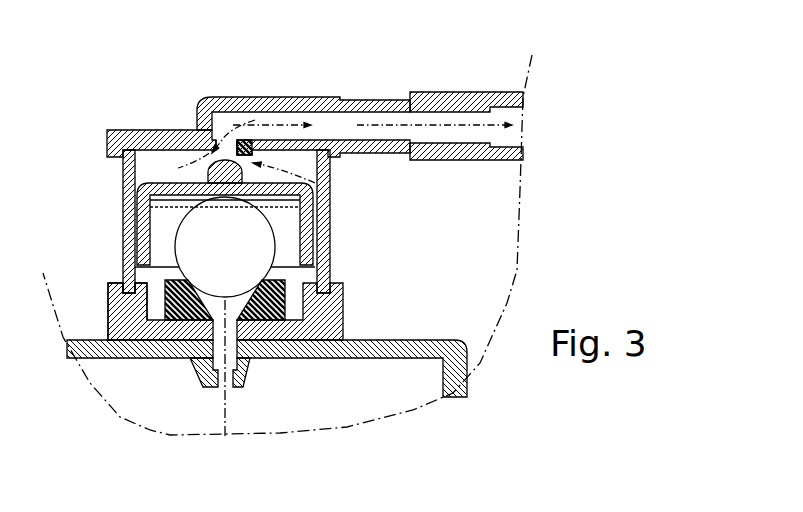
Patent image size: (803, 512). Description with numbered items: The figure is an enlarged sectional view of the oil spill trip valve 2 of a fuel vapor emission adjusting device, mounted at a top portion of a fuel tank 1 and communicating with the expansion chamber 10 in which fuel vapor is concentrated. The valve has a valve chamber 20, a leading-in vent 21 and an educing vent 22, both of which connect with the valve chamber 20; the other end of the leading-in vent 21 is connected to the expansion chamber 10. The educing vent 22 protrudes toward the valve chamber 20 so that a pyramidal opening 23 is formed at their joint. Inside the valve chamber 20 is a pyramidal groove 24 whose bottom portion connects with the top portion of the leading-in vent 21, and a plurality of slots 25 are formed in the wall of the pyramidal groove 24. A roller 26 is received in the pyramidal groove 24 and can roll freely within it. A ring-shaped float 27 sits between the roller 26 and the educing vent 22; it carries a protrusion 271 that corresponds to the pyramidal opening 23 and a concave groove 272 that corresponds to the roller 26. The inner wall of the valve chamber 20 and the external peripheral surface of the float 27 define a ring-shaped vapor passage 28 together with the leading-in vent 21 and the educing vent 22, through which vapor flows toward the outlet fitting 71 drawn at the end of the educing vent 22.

The fuel tank 1 is at (403, 347).
The oil spill trip valve 2 is at (199, 96).
The expansion chamber 10 is at (395, 388).
The valve chamber 20 is at (163, 173).
The leading-in vent 21 is at (233, 357).
The educing vent 22 is at (229, 130).
The pyramidal opening 23 is at (233, 151).
The pyramidal groove 24 is at (172, 314).
The slots 25 is at (147, 303).
The roller 26 is at (195, 248).
The ring-shaped float 27 is at (317, 218).
The ring-shaped vapor passage 28 is at (145, 213).
The connector 71 is at (507, 93).
The protrusion 271 is at (208, 167).
The concave groove 272 is at (287, 238).